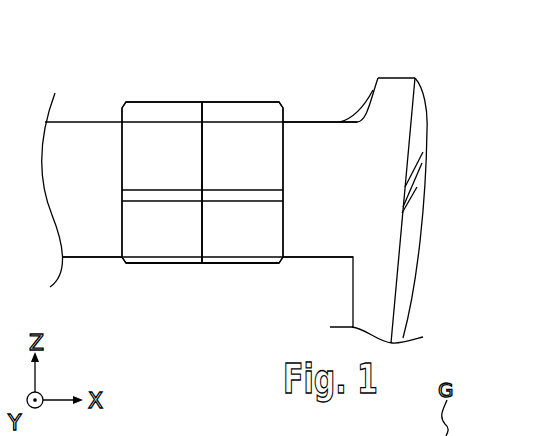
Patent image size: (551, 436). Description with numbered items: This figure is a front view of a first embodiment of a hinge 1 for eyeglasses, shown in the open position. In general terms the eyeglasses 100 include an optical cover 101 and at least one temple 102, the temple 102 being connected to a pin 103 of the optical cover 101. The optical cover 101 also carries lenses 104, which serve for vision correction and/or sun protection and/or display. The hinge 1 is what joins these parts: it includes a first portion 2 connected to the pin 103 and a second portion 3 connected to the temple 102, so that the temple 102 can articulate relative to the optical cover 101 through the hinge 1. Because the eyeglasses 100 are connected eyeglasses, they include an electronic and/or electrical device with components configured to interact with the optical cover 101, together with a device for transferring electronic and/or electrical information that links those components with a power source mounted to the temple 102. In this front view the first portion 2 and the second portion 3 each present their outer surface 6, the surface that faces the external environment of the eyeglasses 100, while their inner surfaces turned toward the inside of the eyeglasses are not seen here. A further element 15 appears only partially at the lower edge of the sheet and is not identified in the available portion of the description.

The hinge 1 is at (197, 88).
The first portion 2 is at (245, 115).
The second portion 3 is at (168, 117).
The outer surface 6 is at (164, 250).
The eyeglasses 100 is at (110, 108).
The optical cover 101 is at (432, 91).
The temple 102 is at (101, 233).
The pin 103 is at (305, 146).
The lenses 104 is at (401, 274).
The element of adjacent figure 15 is at (416, 435).